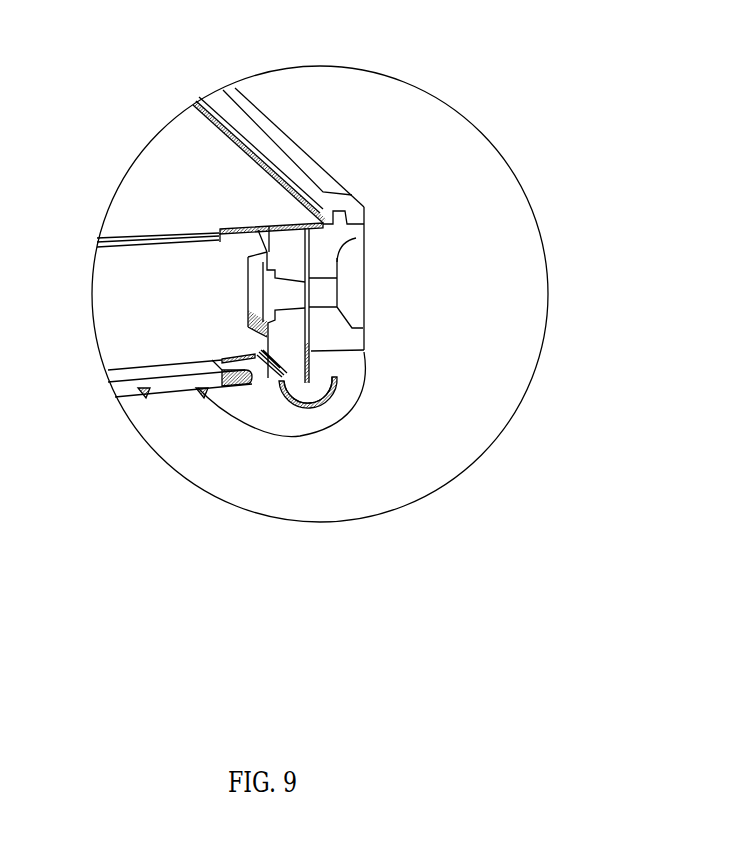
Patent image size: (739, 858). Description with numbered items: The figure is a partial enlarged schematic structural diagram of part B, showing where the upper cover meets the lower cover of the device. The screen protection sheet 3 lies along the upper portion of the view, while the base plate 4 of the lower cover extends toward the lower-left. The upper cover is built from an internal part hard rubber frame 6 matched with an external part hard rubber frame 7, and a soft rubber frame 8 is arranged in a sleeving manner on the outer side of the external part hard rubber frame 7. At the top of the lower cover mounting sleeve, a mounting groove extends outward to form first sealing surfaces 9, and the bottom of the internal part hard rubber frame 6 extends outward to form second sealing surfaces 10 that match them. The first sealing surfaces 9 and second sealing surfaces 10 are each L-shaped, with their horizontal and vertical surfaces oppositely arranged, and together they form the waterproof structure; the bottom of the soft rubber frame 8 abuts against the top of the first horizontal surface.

The part B is at (363, 113).
The screen protection sheet 3 is at (187, 192).
The base plate 4 is at (150, 388).
The internal part hard rubber frame 6 is at (293, 362).
The external part hard rubber frame 7 is at (320, 250).
The soft rubber frame 8 is at (352, 287).
The first sealing surface 9 is at (267, 375).
The second sealing surface 10 is at (310, 392).